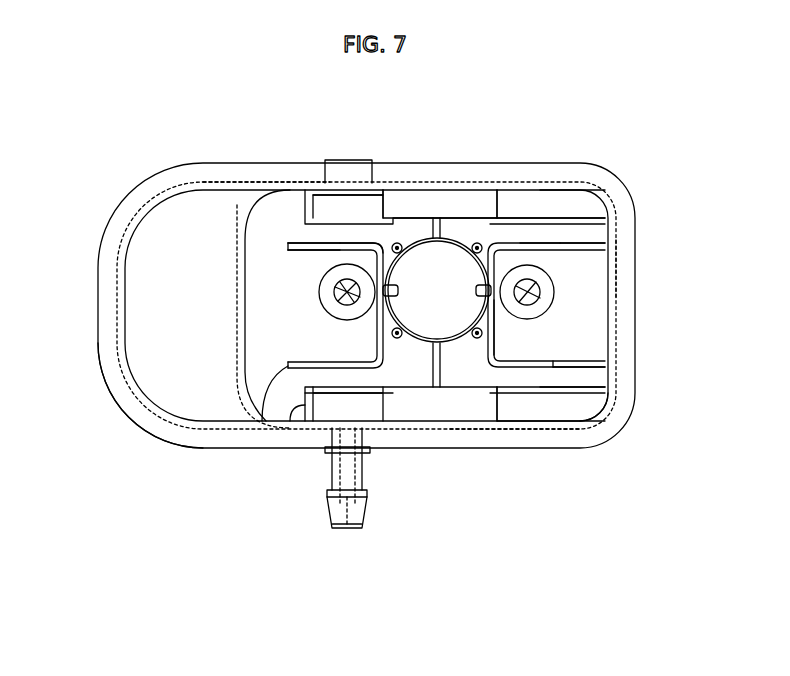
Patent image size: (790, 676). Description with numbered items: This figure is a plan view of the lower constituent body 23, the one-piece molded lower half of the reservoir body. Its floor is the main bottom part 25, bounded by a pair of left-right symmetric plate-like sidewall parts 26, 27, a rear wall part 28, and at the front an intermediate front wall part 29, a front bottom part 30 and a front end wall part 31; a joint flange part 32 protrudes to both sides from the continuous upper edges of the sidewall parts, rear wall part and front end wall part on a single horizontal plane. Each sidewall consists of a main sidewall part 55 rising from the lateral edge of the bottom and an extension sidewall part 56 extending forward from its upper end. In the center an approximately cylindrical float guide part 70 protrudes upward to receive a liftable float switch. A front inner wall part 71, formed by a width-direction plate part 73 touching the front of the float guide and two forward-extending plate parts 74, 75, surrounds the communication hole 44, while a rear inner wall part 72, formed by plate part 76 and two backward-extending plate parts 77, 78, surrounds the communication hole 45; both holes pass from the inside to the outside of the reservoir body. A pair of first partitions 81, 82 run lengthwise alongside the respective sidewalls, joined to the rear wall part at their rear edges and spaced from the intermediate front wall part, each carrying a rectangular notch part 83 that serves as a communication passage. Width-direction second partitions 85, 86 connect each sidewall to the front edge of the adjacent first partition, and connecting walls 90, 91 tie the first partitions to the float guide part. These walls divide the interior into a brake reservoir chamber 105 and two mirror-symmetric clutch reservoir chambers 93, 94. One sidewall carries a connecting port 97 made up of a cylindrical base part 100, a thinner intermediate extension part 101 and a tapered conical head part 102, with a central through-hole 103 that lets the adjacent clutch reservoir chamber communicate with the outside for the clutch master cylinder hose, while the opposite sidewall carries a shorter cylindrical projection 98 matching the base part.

The lower constituent body 23 is at (665, 210).
The main bottom part 25 is at (568, 378).
The sidewall part 26 is at (500, 429).
The sidewall part 27 is at (497, 207).
The rear wall part 28 is at (617, 265).
The intermediate front wall part 29 is at (238, 290).
The front bottom part 30 is at (160, 257).
The front end wall part 31 is at (113, 332).
The joint flange part 32 is at (133, 403).
The communication hole 44 is at (335, 293).
The communication hole 45 is at (540, 295).
The main sidewall part 55 is at (393, 183).
The extension sidewall part 56 is at (243, 185).
The float guide part 70 is at (483, 352).
The front inner wall part 71 is at (300, 243).
The rear inner wall part 72 is at (580, 242).
The plate part 73 is at (380, 335).
The plate part 74 is at (262, 427).
The plate part 75 is at (290, 250).
The plate part 76 is at (493, 332).
The plate part 77 is at (592, 366).
The plate part 78 is at (577, 242).
The partition 81 is at (527, 397).
The partition 82 is at (538, 216).
The notch part 83 is at (410, 218).
The partition 85 is at (292, 427).
The partition 86 is at (288, 196).
The connecting wall 90 is at (443, 367).
The connecting wall 91 is at (440, 232).
The clutch reservoir chamber 93 is at (553, 407).
The clutch reservoir chamber 94 is at (575, 195).
The connecting port 97 is at (365, 505).
The projection 98 is at (355, 160).
The base part 100 is at (372, 450).
The intermediate extension part 101 is at (330, 472).
The head part 102 is at (330, 518).
The through-hole 103 is at (353, 507).
The brake reservoir chamber 105 is at (255, 370).